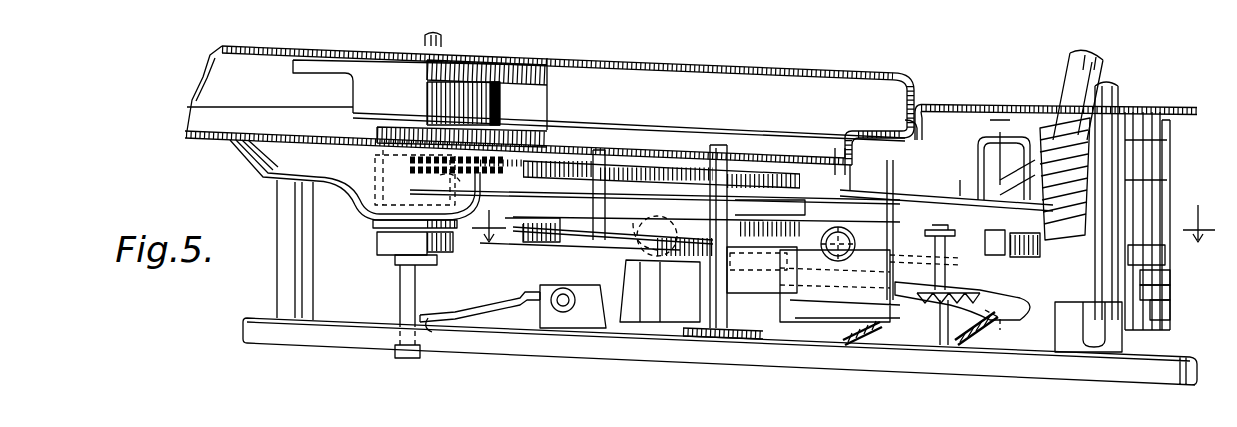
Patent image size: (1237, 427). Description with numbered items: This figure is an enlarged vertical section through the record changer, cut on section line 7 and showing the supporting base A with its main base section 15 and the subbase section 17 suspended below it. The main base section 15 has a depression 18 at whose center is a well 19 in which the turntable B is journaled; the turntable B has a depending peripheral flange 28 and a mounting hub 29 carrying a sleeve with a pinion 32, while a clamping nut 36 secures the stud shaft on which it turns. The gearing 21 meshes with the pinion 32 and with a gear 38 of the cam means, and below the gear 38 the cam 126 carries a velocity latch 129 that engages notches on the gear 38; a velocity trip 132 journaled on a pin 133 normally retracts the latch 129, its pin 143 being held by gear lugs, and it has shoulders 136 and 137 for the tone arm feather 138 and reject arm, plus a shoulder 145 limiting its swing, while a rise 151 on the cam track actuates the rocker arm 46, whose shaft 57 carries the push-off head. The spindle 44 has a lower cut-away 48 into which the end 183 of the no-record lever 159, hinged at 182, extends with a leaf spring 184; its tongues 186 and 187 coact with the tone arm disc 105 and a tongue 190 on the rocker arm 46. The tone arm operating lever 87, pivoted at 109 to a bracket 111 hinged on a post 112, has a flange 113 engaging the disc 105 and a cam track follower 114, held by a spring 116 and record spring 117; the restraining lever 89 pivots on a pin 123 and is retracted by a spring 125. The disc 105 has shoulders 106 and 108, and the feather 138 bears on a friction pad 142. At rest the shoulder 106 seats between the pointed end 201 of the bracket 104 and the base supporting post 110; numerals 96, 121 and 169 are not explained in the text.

The section line 7- 7 is at (843, 222).
The main base section 15 is at (1186, 106).
The subbase section 17 is at (690, 353).
The depression 18 is at (695, 136).
The well 19 is at (360, 208).
The gearing 21 is at (535, 132).
The depending peripheral flange 28 is at (900, 102).
The mounting hub 29 is at (365, 92).
The pinion 32 is at (377, 130).
The clamping nut 36 is at (385, 255).
The gear 38 is at (558, 165).
The spindle 44 is at (425, 42).
The rocker arm 46 is at (1050, 335).
The cut-away 48 is at (400, 312).
The shaft 57 is at (1062, 88).
The tone arm operating lever 87 is at (812, 300).
The restraining lever 89 is at (941, 244).
The post 96 is at (1118, 101).
The bracket 104 is at (1170, 312).
The disc 105 is at (1165, 256).
The shoulder 106 is at (1170, 295).
The shoulder 108 is at (990, 230).
The pivot 109 is at (845, 258).
The base supporting post 110 is at (1160, 333).
The bracket 111 is at (905, 230).
The post 112 is at (852, 160).
The flange 113 is at (1010, 305).
The cam track follower 114 is at (648, 290).
The spring 116 is at (915, 322).
The record spring 117 is at (865, 335).
The link 121 is at (923, 246).
The pin 123 is at (942, 347).
The spring 125 is at (972, 345).
The cam 126 is at (613, 248).
The velocity latch 129 is at (465, 188).
The velocity trip 132 is at (736, 204).
The pin 133 is at (762, 270).
The shoulder 136 is at (830, 166).
The shoulder 137 is at (606, 165).
The tone arm feather 138 is at (938, 193).
The friction pad 142 is at (1165, 191).
The pin 143 is at (745, 170).
The shoulder 145 is at (530, 243).
The rise 151 is at (640, 252).
The no-record lever 159 is at (495, 328).
The rack 169 is at (1078, 179).
The hinge 182 is at (563, 312).
The lever end 183 is at (432, 328).
The leaf spring 184 is at (495, 312).
The tongue 186 is at (1030, 166).
The tongue 187 is at (1010, 148).
The tongue 190 is at (1011, 177).
The pointed end 201 is at (1170, 278).
The supporting base A is at (258, 180).
The turntable B is at (600, 46).